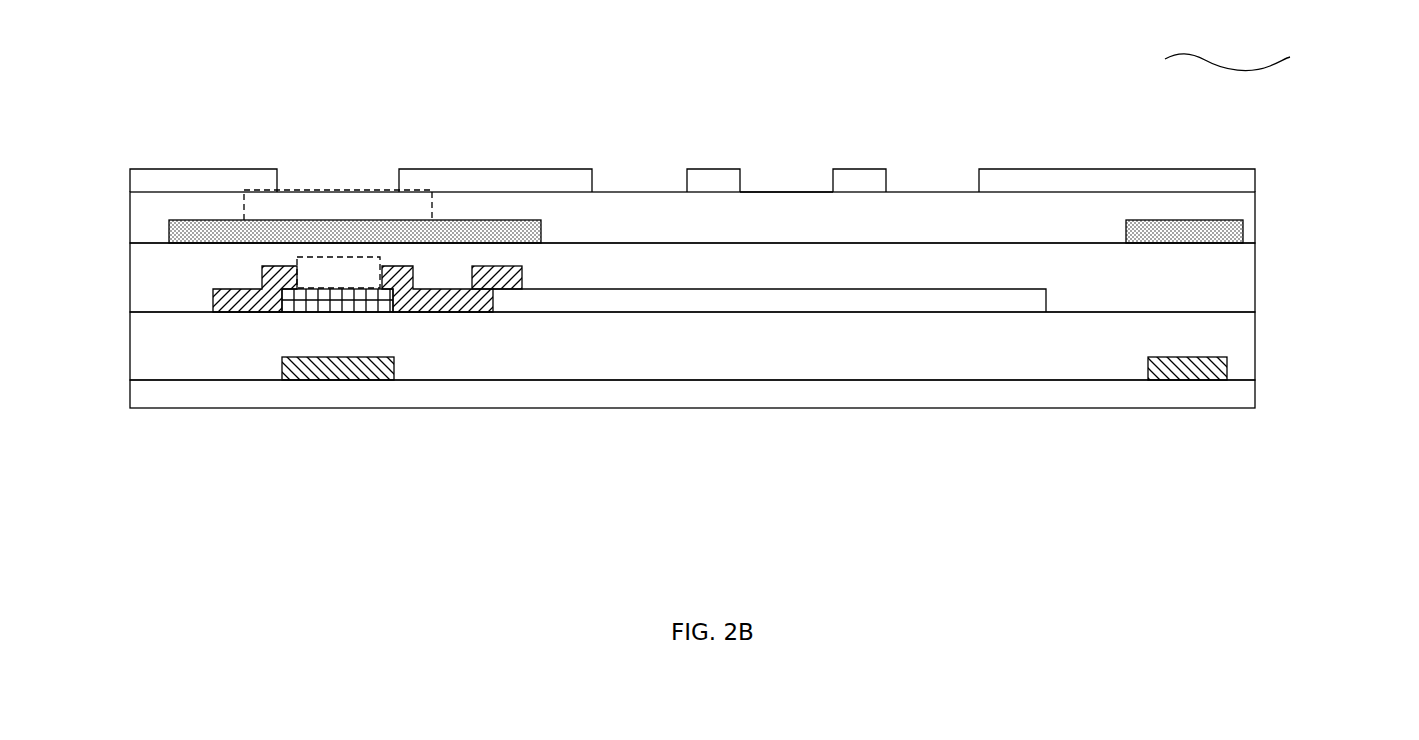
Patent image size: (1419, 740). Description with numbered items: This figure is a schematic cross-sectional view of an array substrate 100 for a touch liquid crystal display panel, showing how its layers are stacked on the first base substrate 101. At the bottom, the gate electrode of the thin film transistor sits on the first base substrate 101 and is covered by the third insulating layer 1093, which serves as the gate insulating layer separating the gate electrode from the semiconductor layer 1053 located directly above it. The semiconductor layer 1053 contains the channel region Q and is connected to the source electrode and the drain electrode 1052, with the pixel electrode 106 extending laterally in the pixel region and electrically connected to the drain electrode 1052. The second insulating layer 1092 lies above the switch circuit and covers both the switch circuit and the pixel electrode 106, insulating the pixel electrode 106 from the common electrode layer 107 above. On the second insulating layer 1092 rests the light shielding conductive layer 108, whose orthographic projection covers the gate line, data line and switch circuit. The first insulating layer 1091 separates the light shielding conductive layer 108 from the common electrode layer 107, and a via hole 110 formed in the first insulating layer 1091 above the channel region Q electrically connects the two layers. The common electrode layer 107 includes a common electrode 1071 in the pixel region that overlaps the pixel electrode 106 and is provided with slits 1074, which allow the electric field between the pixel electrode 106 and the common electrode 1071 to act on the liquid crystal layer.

The array substrate 100 is at (1248, 60).
The first base substrate 101 is at (692, 430).
The first insulating layer 1091 is at (754, 202).
The second insulating layer 1092 is at (754, 271).
The third insulating layer 1093 is at (754, 336).
The common electrode layer 107 is at (657, 151).
The common electrode 1071 is at (759, 149).
The slit 1074 is at (771, 149).
The light shielding conductive layer 108 is at (706, 176).
The via hole 110 is at (338, 165).
The pixel electrode 106 is at (769, 209).
The drain electrode 1052 is at (473, 199).
The semiconductor layer 1053 is at (309, 211).
The channel region Q is at (224, 301).